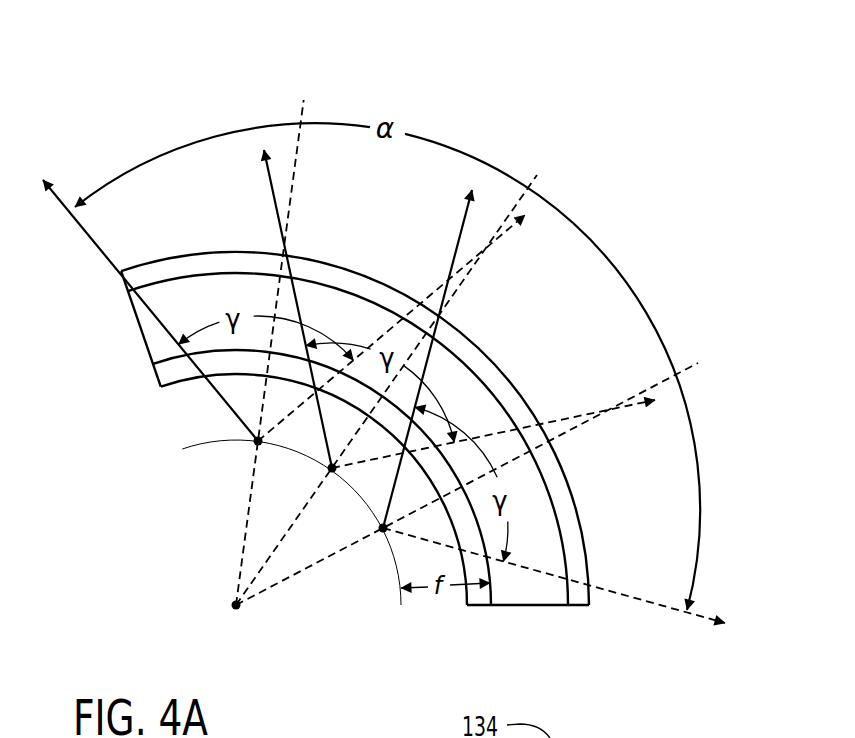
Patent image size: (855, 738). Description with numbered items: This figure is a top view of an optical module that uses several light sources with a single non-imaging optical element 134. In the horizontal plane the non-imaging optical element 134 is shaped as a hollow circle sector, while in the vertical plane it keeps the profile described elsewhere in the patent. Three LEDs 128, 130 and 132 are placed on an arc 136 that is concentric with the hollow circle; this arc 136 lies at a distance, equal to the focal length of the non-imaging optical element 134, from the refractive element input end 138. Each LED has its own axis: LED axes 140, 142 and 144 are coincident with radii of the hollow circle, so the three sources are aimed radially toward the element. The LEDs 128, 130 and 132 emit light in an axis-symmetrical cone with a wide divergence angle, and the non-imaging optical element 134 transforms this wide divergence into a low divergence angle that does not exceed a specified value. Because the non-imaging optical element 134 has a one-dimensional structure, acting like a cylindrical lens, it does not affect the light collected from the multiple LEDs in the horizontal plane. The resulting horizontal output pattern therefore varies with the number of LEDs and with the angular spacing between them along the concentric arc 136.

The LED 128 is at (258, 441).
The LED 130 is at (332, 468).
The LED 132 is at (383, 528).
The non-imaging optical element 134 is at (568, 605).
The arc 136 is at (397, 583).
The refractive element input end 138 is at (491, 605).
The LED axis 140 is at (303, 103).
The LED axis 142 is at (535, 175).
The LED axis 144 is at (690, 365).